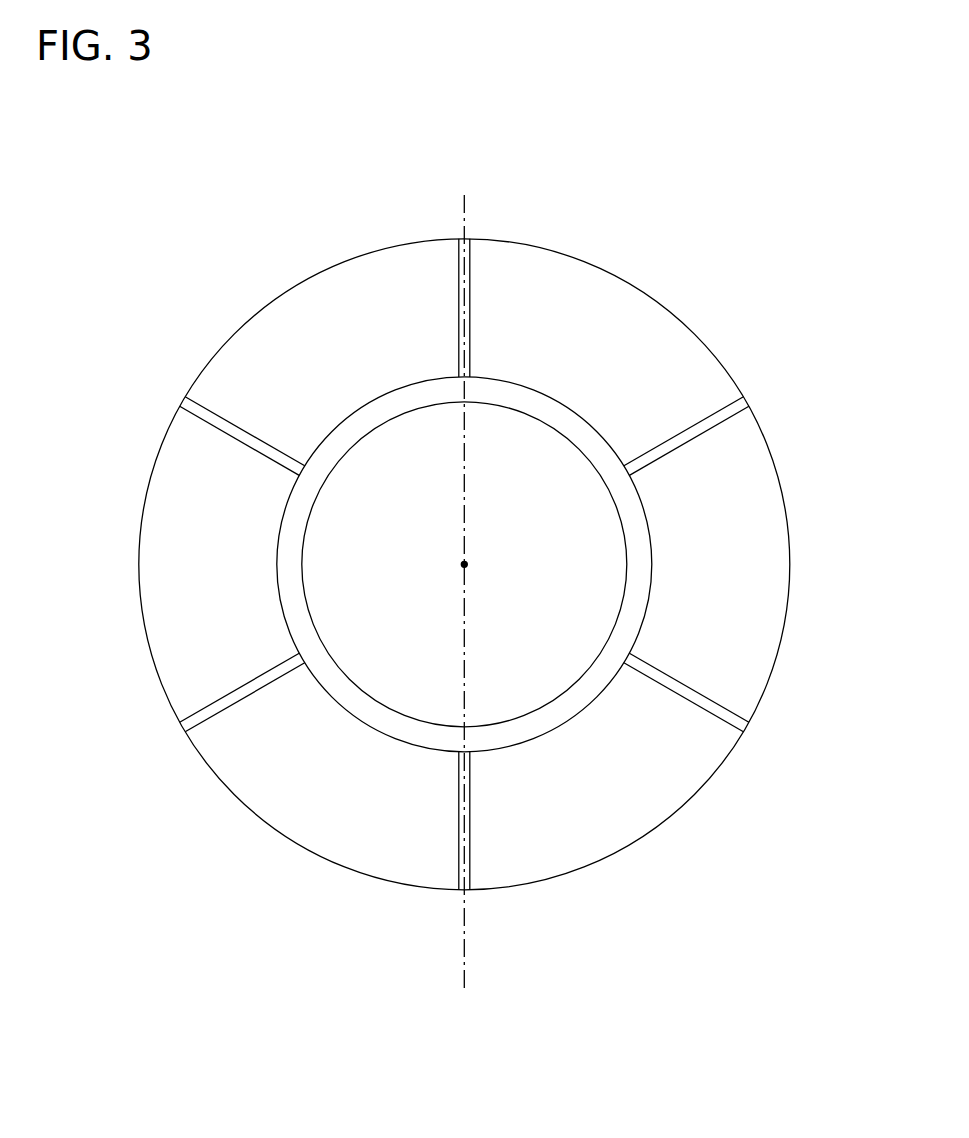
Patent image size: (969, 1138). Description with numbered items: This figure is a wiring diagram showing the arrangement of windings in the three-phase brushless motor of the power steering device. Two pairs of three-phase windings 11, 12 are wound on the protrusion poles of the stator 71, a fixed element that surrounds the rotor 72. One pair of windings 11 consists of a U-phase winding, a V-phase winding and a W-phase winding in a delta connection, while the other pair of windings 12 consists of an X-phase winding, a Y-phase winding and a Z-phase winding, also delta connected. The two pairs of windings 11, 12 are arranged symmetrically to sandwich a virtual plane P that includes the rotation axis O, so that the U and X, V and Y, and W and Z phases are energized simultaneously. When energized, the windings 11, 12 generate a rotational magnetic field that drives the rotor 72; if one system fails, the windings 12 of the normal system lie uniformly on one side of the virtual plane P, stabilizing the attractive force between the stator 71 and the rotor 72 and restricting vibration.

The three-phase windings 11 is at (296, 222).
The three-phase windings 12 is at (663, 225).
The stator 71 is at (264, 308).
The rotor 72 is at (305, 527).
The rotation axis O is at (466, 563).
The virtual plane P is at (463, 963).